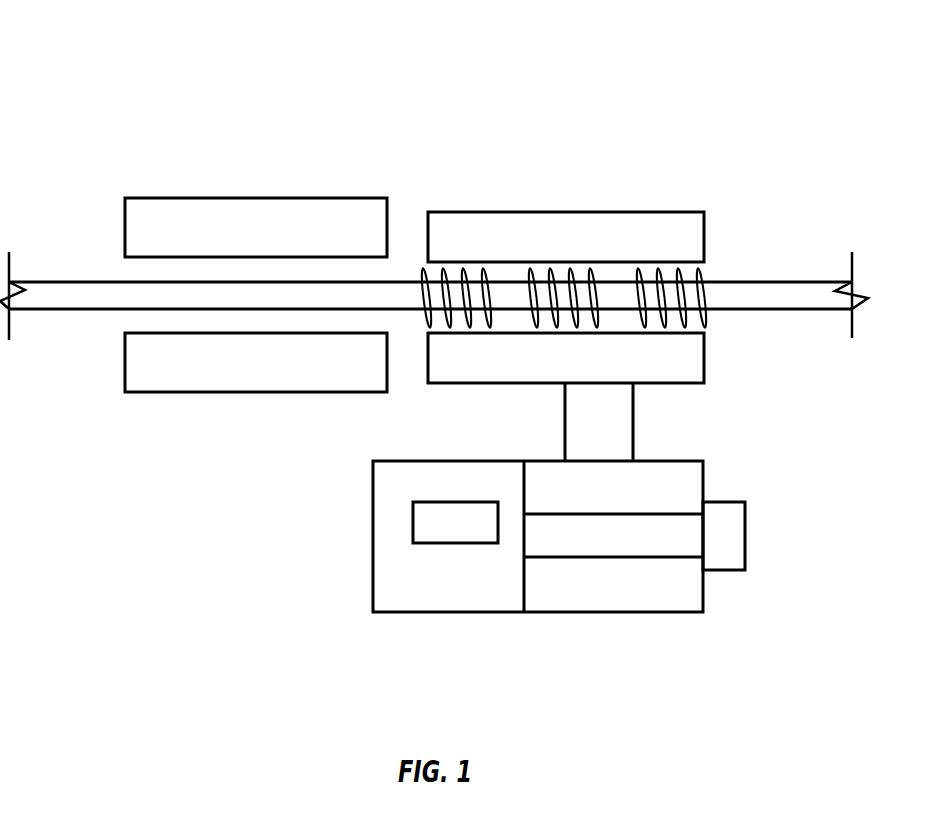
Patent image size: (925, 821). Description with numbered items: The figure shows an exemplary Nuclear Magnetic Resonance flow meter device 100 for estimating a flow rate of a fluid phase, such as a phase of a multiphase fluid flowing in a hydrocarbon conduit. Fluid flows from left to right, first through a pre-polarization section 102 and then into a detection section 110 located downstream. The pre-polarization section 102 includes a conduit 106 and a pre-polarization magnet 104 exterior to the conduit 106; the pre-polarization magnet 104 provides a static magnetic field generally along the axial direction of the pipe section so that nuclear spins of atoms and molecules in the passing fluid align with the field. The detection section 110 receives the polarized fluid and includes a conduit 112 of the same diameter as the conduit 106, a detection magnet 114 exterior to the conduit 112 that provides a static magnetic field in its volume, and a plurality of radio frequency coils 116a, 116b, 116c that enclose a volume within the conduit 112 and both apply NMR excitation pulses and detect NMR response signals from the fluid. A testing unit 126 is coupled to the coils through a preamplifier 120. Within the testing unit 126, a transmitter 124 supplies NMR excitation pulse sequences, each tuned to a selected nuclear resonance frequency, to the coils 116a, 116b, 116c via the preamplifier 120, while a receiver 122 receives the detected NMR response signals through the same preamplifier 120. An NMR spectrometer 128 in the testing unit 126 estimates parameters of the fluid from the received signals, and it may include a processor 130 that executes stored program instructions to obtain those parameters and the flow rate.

The NMR flow meter device 100 is at (132, 50).
The pre-polarization section 102 is at (197, 147).
The pre-polarization magnet 104 is at (305, 210).
The conduit 106 is at (67, 311).
The detection section 110 is at (495, 133).
The conduit 112 is at (740, 281).
The detection magnet 114 is at (488, 212).
The RF coil 116a is at (483, 268).
The RF coil 116b is at (590, 268).
The RF coil 116c is at (678, 268).
The preamplifier 120 is at (688, 477).
The receiver 122 is at (688, 543).
The transmitter 124 is at (688, 595).
The testing unit 126 is at (358, 637).
The NMR spectrometer 128 is at (385, 505).
The processor 130 is at (413, 532).